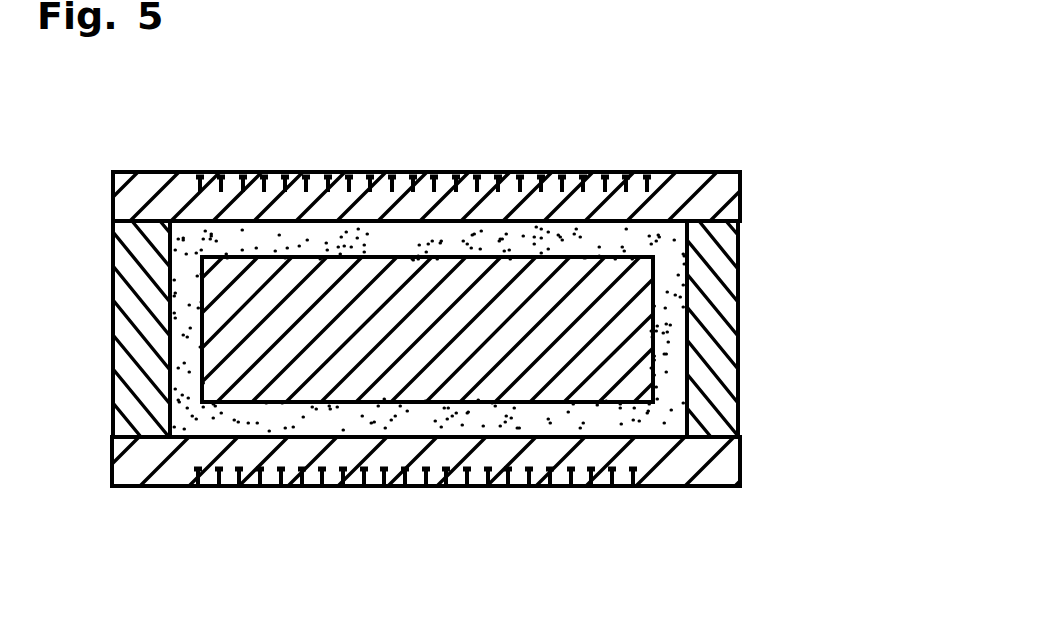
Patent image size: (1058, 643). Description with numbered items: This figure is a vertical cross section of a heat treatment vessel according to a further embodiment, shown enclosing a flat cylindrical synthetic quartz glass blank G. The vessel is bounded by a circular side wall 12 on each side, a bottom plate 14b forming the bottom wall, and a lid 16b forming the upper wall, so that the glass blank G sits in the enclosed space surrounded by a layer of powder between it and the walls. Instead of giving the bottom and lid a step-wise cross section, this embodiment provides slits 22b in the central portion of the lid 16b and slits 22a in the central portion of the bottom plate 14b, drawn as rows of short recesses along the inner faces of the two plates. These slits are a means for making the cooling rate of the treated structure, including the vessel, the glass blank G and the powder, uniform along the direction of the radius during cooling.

The lid 16b is at (717, 195).
The slits 22b is at (488, 168).
The bottom plate 14b is at (717, 457).
The slits 22a is at (560, 485).
The circular side wall 12 is at (710, 340).
The synthetic quartz glass blank G is at (433, 370).